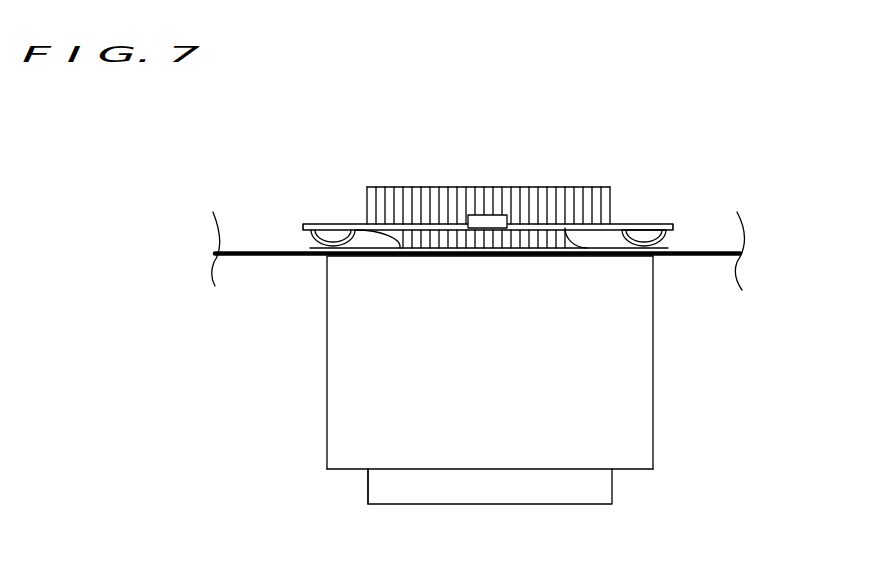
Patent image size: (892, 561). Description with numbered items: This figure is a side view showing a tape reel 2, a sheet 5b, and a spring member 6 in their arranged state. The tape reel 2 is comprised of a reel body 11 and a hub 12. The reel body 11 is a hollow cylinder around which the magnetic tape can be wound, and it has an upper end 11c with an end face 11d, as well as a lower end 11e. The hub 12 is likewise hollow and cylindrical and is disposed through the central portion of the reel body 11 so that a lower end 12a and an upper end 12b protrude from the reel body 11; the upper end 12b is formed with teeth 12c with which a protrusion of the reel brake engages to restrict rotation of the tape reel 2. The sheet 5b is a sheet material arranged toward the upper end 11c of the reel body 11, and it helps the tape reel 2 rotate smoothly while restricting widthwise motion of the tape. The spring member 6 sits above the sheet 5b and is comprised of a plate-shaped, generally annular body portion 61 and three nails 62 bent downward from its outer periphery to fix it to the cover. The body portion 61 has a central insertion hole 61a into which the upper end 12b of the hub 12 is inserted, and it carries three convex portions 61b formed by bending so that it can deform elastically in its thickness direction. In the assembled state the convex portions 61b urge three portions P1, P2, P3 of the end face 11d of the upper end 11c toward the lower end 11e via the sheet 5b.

The tape reel 2 is at (523, 383).
The sheet 5b is at (256, 258).
The spring member 6 is at (485, 189).
The reel body 11 is at (577, 362).
The upper end 11c is at (643, 272).
The end face 11d is at (552, 246).
The lower end 11e is at (645, 460).
The hub 12 is at (499, 489).
The lower end 12a is at (377, 489).
The upper end 12b is at (427, 193).
The teeth 12c is at (437, 199).
The body portion 61 is at (395, 222).
The insertion hole 61a is at (613, 222).
The convex portions 61b is at (304, 236).
The nails 62 is at (471, 215).
The portion P1 is at (351, 258).
The portion P2 is at (487, 258).
The portion P3 is at (622, 258).